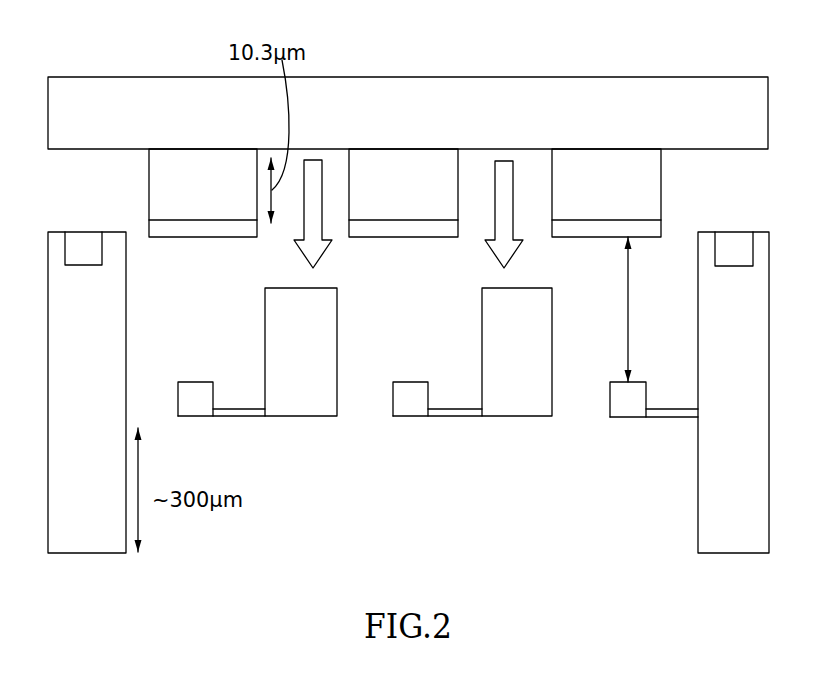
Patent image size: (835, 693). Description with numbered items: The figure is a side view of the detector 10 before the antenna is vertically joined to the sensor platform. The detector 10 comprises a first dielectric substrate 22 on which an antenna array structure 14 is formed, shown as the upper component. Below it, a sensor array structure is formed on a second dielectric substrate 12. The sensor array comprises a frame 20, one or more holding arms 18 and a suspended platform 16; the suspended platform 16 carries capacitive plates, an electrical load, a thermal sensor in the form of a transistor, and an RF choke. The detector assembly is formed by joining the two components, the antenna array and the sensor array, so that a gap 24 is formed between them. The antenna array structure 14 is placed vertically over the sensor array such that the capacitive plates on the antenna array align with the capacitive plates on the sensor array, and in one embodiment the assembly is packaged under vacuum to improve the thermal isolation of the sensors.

The detector 10 is at (393, 414).
The second dielectric substrate 12 is at (48, 357).
The antenna array structure 14 is at (185, 237).
The suspended platform 16 is at (185, 417).
The holding arm 18 is at (238, 417).
The frame 20 is at (293, 417).
The first dielectric substrate 22 is at (487, 77).
The gap 24 is at (629, 318).